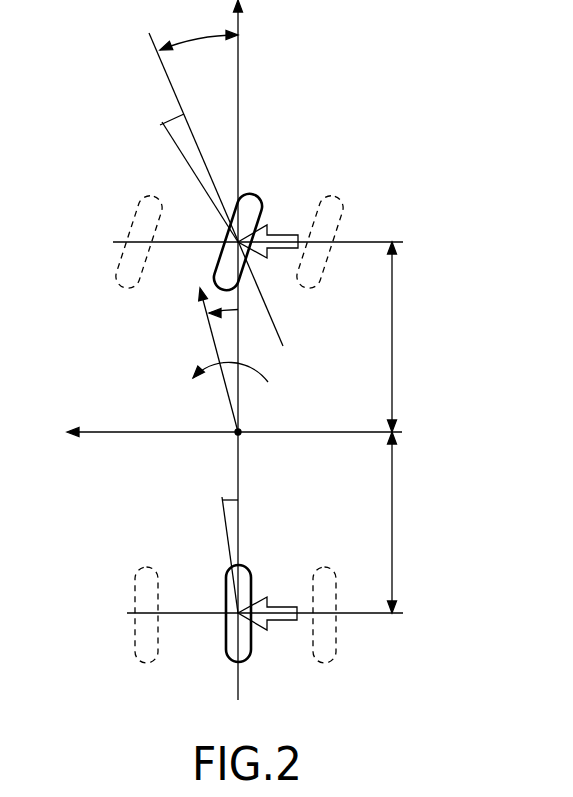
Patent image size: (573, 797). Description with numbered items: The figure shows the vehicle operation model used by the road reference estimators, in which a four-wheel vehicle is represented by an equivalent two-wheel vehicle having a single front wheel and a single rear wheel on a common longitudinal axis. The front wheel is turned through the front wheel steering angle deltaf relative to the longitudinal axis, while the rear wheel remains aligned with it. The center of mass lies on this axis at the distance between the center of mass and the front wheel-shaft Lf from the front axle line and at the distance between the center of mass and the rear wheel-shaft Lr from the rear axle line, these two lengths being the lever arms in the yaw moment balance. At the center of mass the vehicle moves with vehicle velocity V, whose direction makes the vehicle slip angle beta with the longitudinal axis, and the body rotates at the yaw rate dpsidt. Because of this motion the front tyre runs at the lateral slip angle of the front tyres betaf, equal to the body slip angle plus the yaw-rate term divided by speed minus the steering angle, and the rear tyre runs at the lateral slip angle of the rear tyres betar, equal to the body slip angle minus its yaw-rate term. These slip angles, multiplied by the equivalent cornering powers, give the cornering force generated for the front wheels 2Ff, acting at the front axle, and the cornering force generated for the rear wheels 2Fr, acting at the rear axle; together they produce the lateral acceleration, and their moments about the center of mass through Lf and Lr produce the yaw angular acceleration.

The front wheel steering angle deltaf is at (216, 178).
The lateral slip angle of the front tyres betaf is at (168, 118).
The cornering force generated for the front wheels 2Ff is at (280, 233).
The vehicle velocity V is at (213, 345).
The vehicle slip angle beta is at (223, 301).
The yaw rate dpsidt is at (217, 364).
The distance between the center of mass and the front wheel-shaft Lf is at (404, 337).
The distance between the center of mass and the rear wheel-shaft Lr is at (405, 522).
The lateral slip angle of the rear tyres betar is at (232, 497).
The cornering force generated for the rear wheels 2Fr is at (282, 621).